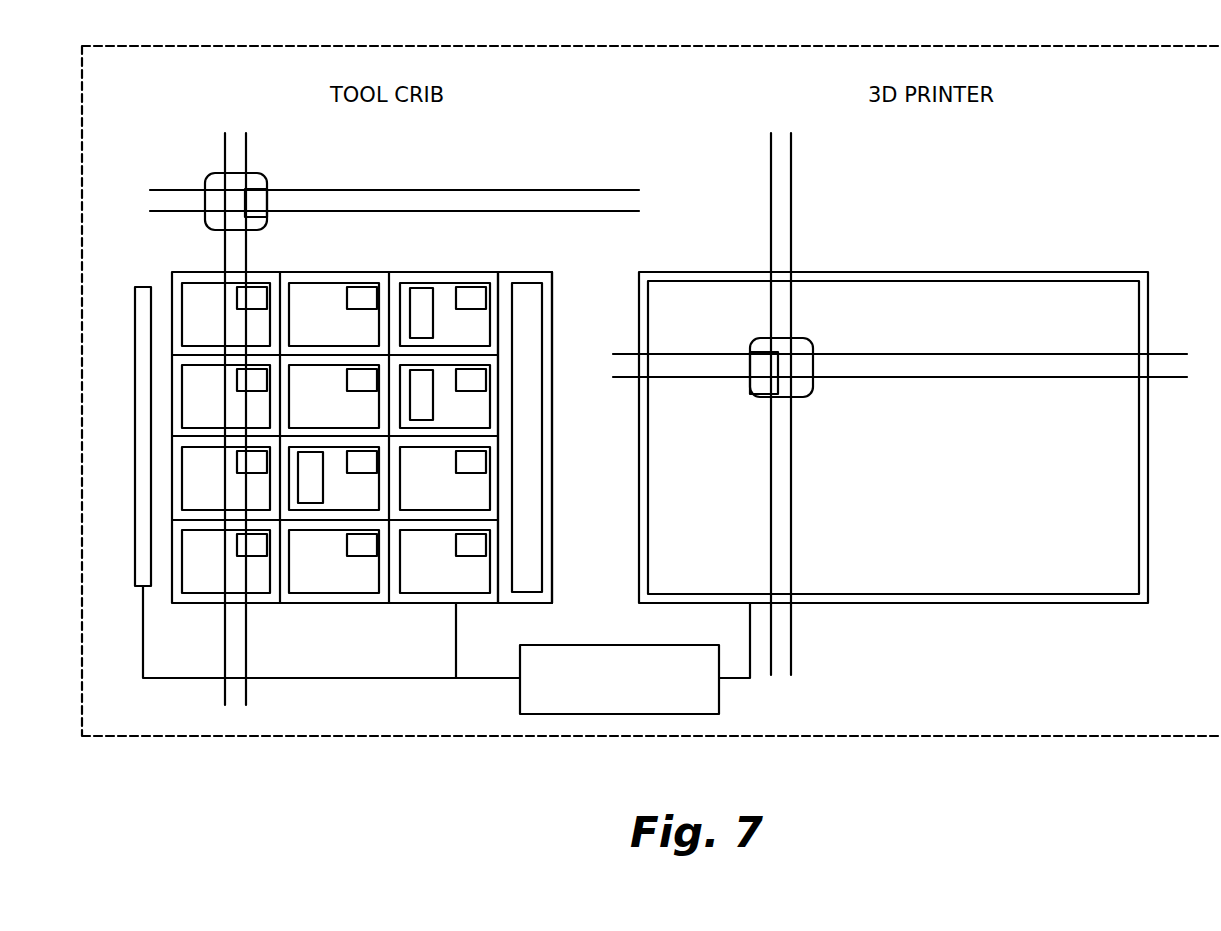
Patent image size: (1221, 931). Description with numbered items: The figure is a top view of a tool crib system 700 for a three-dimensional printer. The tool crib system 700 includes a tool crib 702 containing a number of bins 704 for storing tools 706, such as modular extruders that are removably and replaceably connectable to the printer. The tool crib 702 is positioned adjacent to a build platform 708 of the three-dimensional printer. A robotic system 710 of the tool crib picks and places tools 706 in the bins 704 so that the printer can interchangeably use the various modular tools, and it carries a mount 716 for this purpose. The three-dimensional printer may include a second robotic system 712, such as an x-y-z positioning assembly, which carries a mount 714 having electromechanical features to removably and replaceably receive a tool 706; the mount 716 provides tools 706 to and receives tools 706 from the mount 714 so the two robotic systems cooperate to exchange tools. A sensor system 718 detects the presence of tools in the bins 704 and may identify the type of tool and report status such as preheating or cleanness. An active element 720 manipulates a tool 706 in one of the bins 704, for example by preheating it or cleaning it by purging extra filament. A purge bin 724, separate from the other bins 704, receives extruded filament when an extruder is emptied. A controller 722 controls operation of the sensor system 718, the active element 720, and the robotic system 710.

The tool crib system 700 is at (923, 737).
The tool crib 702 is at (300, 614).
The bins 704 is at (316, 365).
The tools 706 is at (433, 310).
The build platform 708 is at (968, 270).
The robotic system 710 is at (517, 190).
The second robotic system 712 is at (793, 229).
The mount 714 is at (752, 384).
The mount 716 is at (264, 197).
The sensor system 718 is at (133, 323).
The active element 720 is at (470, 288).
The controller 722 is at (635, 658).
The purge bin 724 is at (542, 498).